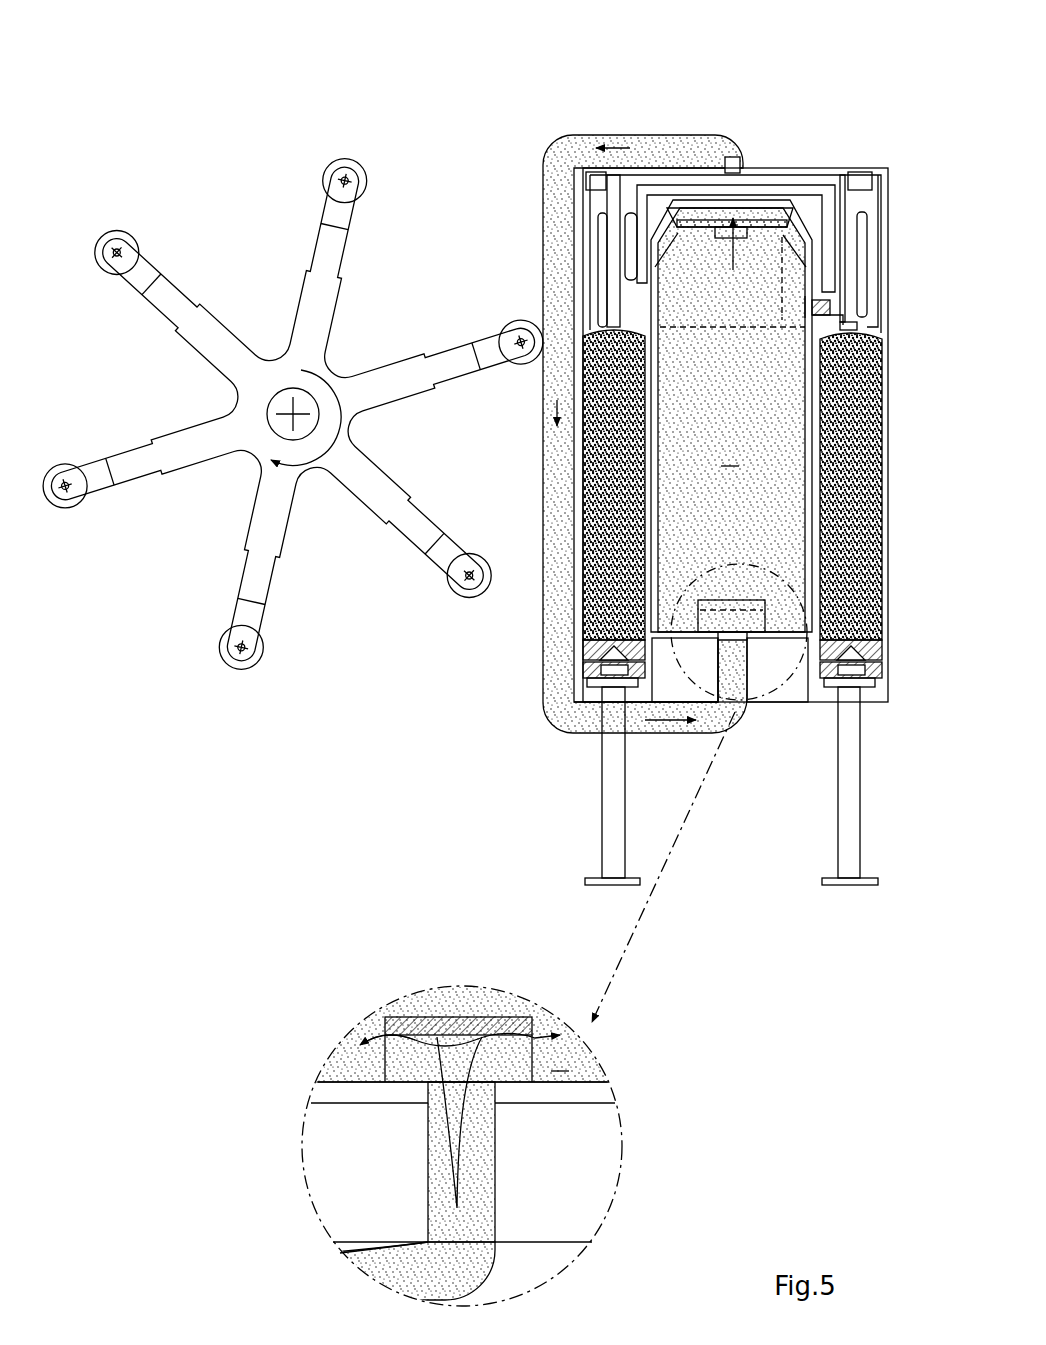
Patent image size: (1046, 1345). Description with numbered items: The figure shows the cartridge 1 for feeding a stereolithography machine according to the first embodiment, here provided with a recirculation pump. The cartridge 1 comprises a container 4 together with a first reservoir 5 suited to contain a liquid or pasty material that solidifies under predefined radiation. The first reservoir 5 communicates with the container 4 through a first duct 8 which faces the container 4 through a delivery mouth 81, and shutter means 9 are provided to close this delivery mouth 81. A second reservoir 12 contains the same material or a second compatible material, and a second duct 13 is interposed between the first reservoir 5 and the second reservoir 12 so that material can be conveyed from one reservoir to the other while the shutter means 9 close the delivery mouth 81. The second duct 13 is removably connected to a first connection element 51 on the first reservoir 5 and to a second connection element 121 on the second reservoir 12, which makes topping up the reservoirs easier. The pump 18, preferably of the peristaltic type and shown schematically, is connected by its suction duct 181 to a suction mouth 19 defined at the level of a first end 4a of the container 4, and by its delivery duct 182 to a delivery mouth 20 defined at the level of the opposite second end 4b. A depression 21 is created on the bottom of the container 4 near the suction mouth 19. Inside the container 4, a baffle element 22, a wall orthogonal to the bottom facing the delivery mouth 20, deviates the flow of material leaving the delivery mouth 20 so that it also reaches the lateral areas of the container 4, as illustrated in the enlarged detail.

The cartridge 1 is at (868, 57).
The pump 18 is at (482, 148).
The suction duct 181 is at (660, 150).
The delivery duct 182 is at (663, 735).
The second duct 13 is at (822, 182).
The first reservoir 5 is at (900, 600).
The second reservoir 12 is at (583, 590).
The second connection element 121 is at (615, 288).
The first connection element 51 is at (852, 260).
The container 4 is at (794, 407).
The first end 4a is at (697, 242).
The second end 4b is at (682, 615).
The suction mouth 19 is at (742, 210).
The depression 21 is at (733, 315).
The first duct 8 is at (832, 310).
The shutter means 9 is at (807, 302).
The delivery mouth 81 is at (808, 318).
The baffle element 22 is at (730, 600).
The delivery mouth 20 is at (742, 635).